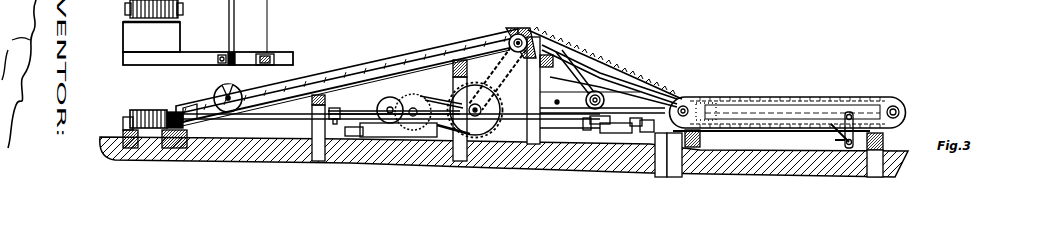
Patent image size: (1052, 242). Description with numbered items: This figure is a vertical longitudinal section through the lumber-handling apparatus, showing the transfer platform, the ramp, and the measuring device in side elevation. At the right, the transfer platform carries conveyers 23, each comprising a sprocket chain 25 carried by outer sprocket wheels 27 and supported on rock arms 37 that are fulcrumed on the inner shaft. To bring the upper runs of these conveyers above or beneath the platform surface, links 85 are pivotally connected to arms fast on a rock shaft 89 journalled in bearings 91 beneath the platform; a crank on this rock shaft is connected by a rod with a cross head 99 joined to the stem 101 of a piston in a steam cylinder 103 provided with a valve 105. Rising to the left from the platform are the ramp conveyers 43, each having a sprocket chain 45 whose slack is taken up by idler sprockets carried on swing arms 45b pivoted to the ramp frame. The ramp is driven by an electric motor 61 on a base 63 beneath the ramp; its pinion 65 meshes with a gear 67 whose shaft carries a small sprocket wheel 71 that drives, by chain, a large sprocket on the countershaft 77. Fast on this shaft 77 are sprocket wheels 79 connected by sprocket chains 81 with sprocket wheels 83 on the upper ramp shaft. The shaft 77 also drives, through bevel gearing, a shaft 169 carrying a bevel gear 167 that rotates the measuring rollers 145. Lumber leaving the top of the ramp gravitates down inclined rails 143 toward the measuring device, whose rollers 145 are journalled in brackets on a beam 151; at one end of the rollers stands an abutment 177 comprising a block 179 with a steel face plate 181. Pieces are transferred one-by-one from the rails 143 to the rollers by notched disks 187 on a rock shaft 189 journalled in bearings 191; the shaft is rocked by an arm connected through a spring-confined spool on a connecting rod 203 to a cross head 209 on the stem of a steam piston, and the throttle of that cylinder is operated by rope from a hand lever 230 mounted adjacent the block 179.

The steel face plate 181 is at (128, 11).
The abutment 177 is at (116, 36).
The block 179 is at (132, 43).
The bearings 191 is at (266, 56).
The hand lever 230 is at (281, 57).
The rollers 145 is at (146, 110).
The bevel gear 167 is at (178, 112).
The disks 187 is at (216, 92).
The rock shaft 189 is at (230, 95).
The inclined rails 143 is at (363, 65).
The connecting rod 203 is at (289, 112).
The electric motor 61 is at (346, 88).
The shaft 169 is at (281, 119).
The cross head 209 is at (341, 124).
The gear 67 is at (414, 100).
The base 63 is at (363, 118).
The pinion 65 is at (389, 97).
The small sprocket wheel 71 is at (441, 95).
The sprocket wheels 79 is at (491, 108).
The shaft 77 is at (495, 123).
The sprocket chains 81 is at (497, 78).
The sprocket wheels 83 is at (512, 35).
The conveyers 43 is at (570, 36).
The swing arms 45b is at (596, 67).
The sprocket chain 45 is at (605, 100).
The valve 105 is at (551, 96).
The steam cylinder 103 is at (602, 110).
The stem 101 is at (599, 123).
The cross head 99 is at (627, 129).
The conveyers 23 is at (781, 92).
The rock arms 37 is at (822, 113).
The outer sprocket wheels 27 is at (905, 110).
The sprocket chain 25 is at (788, 127).
The rock shaft 89 is at (839, 130).
The bearings 91 is at (842, 141).
The links 85 is at (884, 133).
The beam 151 is at (103, 142).